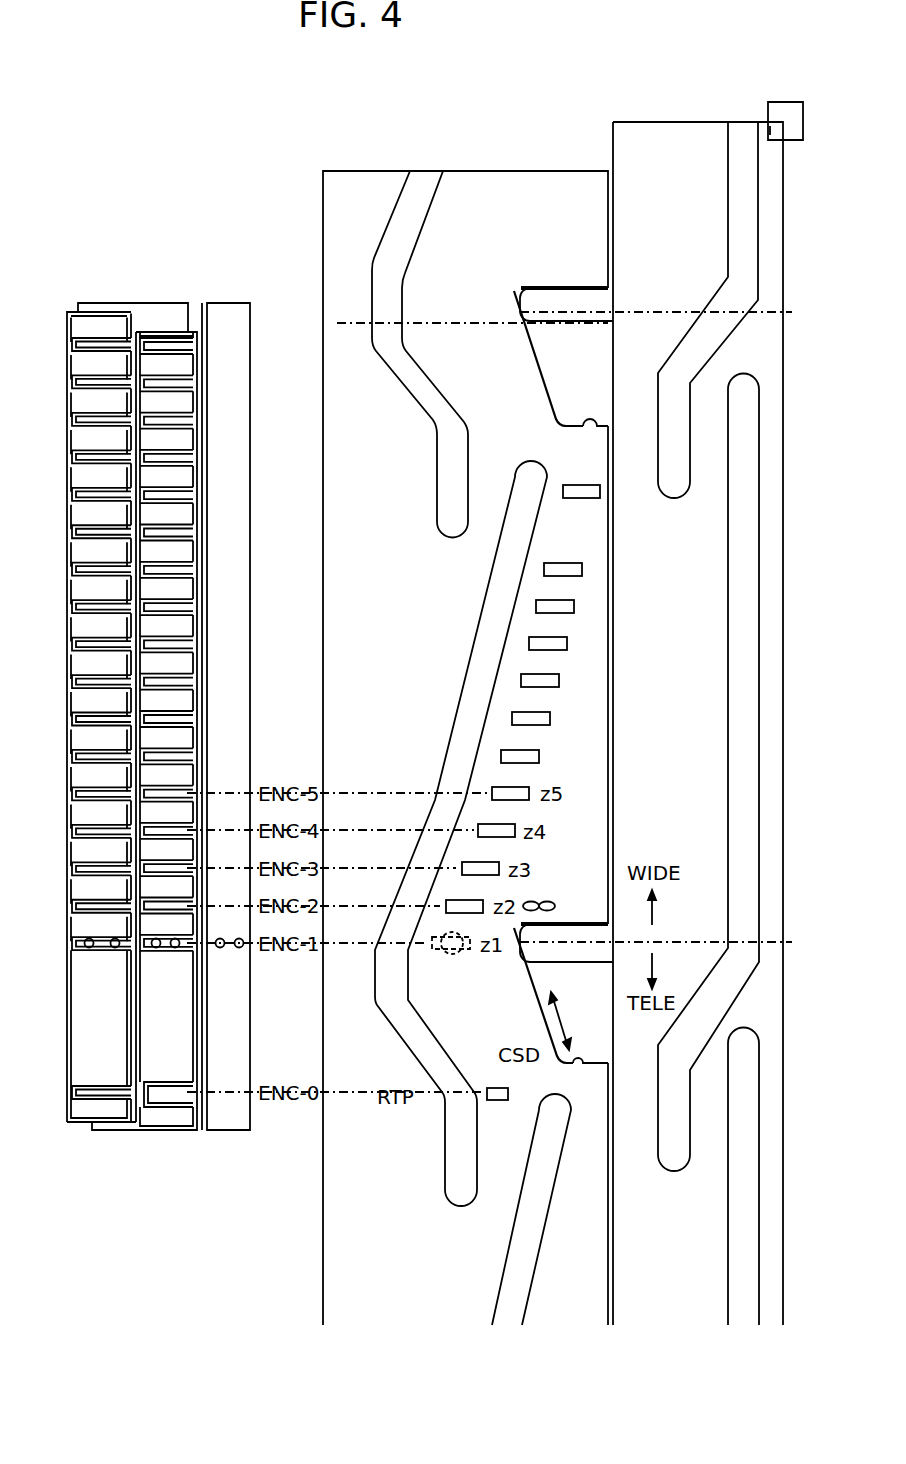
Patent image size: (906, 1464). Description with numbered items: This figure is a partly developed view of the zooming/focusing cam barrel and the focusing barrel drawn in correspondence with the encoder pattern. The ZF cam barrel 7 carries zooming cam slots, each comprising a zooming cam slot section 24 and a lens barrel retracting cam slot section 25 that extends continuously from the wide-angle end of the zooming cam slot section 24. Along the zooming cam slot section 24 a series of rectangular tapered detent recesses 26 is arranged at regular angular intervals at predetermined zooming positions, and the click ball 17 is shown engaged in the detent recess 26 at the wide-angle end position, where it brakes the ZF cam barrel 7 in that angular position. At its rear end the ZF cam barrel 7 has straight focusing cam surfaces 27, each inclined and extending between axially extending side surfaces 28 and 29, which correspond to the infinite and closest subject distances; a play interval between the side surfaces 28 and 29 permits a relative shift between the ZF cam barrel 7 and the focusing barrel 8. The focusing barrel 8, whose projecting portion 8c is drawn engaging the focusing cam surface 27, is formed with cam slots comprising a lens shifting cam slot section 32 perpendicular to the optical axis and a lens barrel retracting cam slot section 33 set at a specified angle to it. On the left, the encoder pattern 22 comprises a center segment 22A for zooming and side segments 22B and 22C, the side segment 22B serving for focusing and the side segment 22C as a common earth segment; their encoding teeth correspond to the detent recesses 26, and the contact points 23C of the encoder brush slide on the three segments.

The ZF cam barrel 7 is at (507, 171).
The focusing barrel 8 is at (683, 122).
The projection of lens barrel 8c is at (590, 298).
The click ball 17 is at (455, 955).
The encoder pattern 22 is at (163, 1135).
The center segment 22A is at (142, 300).
The side segment 22B is at (80, 300).
The side segment 22C is at (233, 300).
The contact pieces 23C is at (225, 972).
The zooming cam slot section 24 is at (393, 215).
The lens barrel retracting cam slot section 25 is at (397, 1022).
The detent recesses 26 is at (548, 688).
The focusing cam surface 27 is at (538, 358).
The side surface 28 is at (566, 292).
The side surface 29 is at (588, 430).
The lens shifting cam slot section 32 is at (729, 207).
The lens barrel retracting cam slot section 33 is at (691, 328).